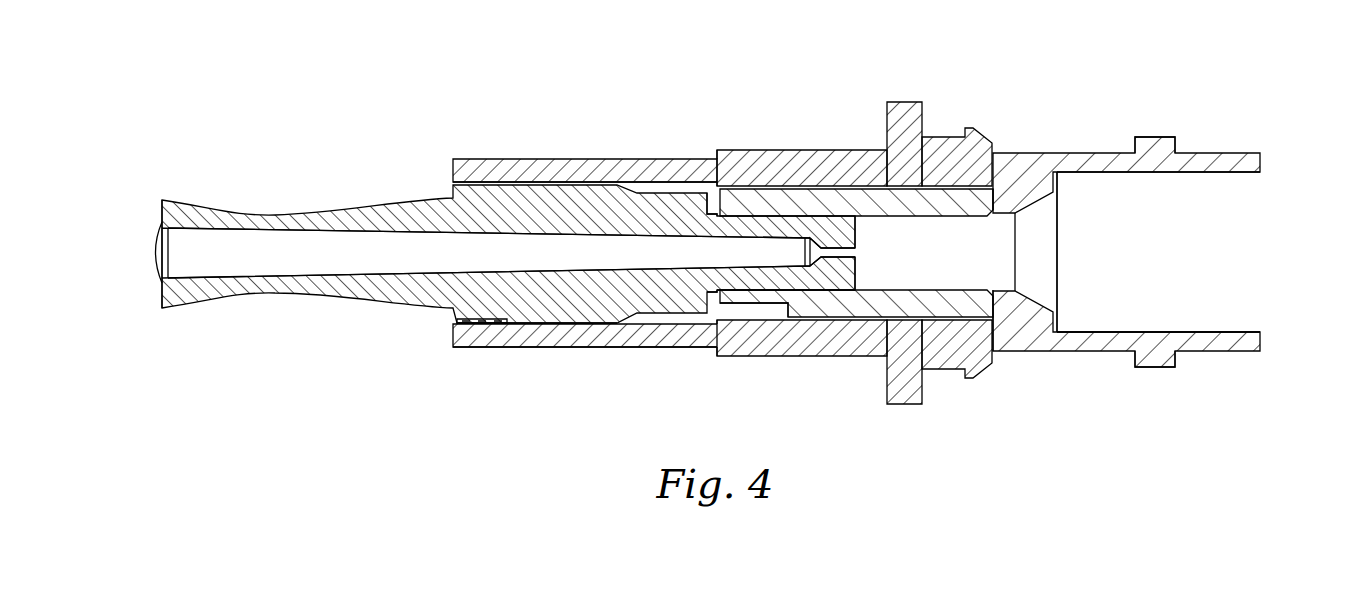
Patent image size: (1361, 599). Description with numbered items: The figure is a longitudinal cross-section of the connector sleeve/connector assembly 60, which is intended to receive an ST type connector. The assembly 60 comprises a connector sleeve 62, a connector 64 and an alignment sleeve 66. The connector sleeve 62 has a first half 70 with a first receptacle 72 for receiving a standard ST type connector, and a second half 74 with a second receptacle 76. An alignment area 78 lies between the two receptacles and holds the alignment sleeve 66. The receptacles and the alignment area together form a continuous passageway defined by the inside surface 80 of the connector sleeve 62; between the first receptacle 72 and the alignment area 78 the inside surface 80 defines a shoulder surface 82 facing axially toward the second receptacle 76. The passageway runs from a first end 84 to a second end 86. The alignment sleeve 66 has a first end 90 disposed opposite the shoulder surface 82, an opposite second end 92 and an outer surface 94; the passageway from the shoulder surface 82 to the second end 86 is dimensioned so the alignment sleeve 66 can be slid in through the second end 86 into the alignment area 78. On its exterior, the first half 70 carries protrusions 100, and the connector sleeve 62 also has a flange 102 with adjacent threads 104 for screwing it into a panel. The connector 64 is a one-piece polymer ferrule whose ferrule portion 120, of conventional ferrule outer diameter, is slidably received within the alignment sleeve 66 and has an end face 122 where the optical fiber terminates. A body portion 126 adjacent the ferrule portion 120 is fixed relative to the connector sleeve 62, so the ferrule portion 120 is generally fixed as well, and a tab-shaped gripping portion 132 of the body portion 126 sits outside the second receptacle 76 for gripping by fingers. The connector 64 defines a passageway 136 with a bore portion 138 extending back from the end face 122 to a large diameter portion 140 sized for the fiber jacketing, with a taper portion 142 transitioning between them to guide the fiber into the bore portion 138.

The connector sleeve/connector assembly 60 is at (649, 358).
The connector sleeve 62 is at (778, 348).
The connector 64 is at (337, 215).
The alignment sleeve 66 is at (768, 195).
The first half 70 is at (1075, 153).
The first receptacle 72 is at (1103, 330).
The second half 74 is at (588, 158).
The second receptacle 76 is at (670, 183).
The alignment area 78 is at (745, 313).
The inside surface 80 is at (718, 316).
The shoulder surface 82 is at (988, 192).
The first end 84 is at (1262, 332).
The second end 86 is at (456, 322).
The first end 90 is at (997, 307).
The second end 92 is at (713, 203).
The outer surface 94 is at (923, 325).
The protrusions 100 is at (1155, 137).
The flange 102 is at (910, 102).
The threads 104 is at (832, 150).
The ferrule portion 120 is at (827, 275).
The end face 122 is at (858, 268).
The body portion 126 is at (529, 312).
The gripping portion 132 is at (202, 308).
The passageway 136 is at (183, 247).
The bore portion 138 is at (815, 251).
The large diameter portion 140 is at (312, 266).
The taper portion 142 is at (818, 245).